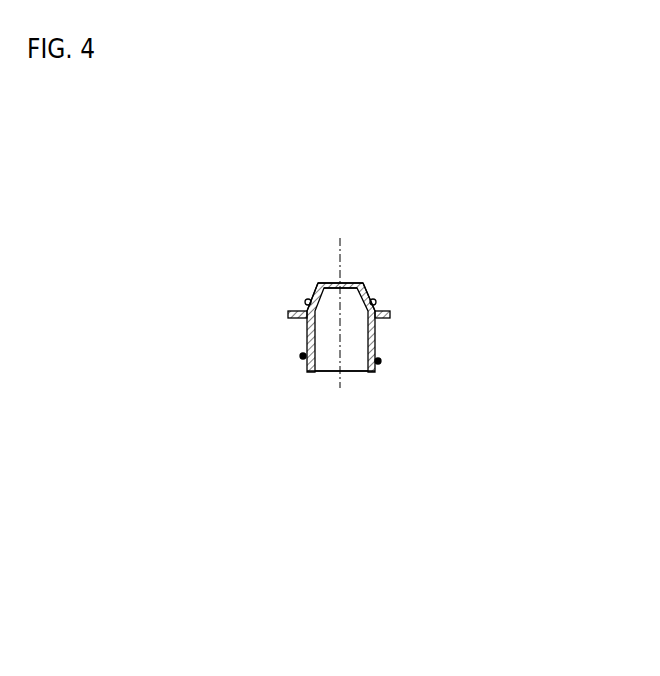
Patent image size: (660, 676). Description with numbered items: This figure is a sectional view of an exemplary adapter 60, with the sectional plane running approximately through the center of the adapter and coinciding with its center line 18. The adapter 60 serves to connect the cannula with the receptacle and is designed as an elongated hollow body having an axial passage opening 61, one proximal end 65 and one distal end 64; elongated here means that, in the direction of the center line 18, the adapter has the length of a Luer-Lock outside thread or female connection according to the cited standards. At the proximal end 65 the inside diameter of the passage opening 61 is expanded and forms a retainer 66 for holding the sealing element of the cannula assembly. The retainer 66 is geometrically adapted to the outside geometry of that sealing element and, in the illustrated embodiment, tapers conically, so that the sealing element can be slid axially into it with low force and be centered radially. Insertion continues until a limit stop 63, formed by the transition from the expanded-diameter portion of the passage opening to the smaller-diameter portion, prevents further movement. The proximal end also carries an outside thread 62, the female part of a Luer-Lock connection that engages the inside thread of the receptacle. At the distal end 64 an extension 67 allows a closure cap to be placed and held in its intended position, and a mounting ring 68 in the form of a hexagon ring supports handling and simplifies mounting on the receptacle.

The adapter 60 is at (348, 122).
The center line 18 is at (343, 282).
The axial passage opening 61 is at (347, 285).
The limit stop 63 is at (331, 290).
The distal end 64 is at (373, 292).
The mounting ring 68 is at (290, 313).
The extension 67 is at (390, 316).
The outside thread 62 is at (300, 356).
The proximal end 65 is at (380, 357).
The retainer 66 is at (355, 338).